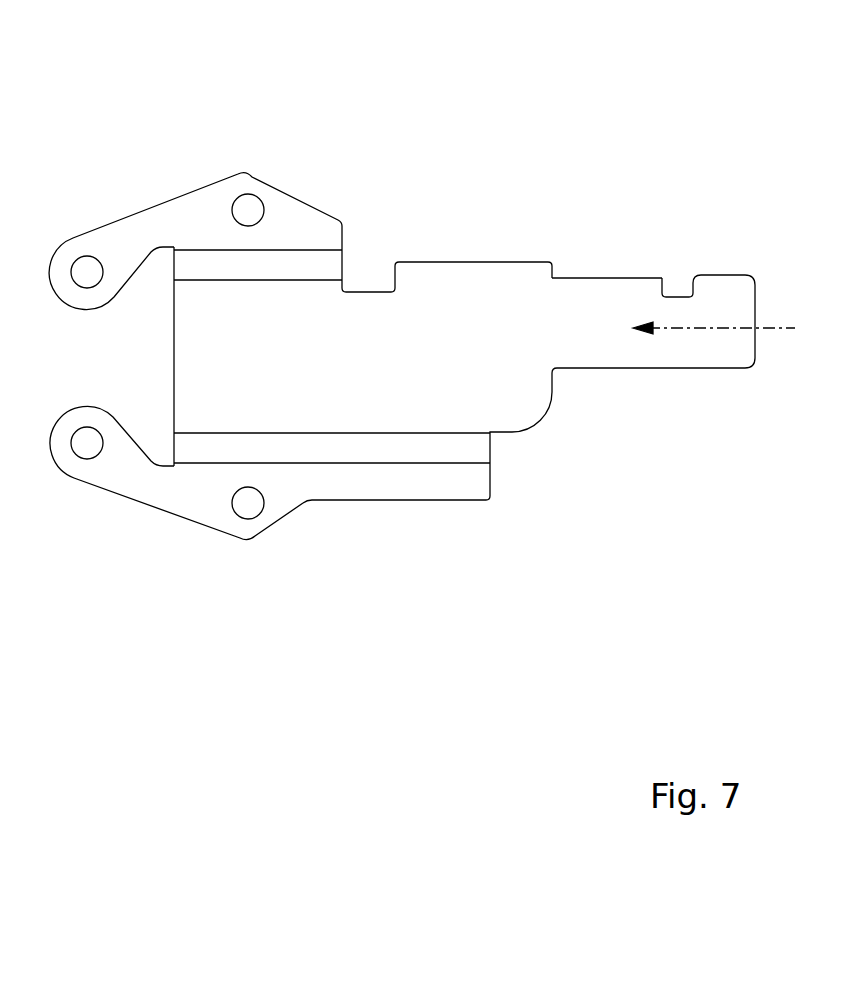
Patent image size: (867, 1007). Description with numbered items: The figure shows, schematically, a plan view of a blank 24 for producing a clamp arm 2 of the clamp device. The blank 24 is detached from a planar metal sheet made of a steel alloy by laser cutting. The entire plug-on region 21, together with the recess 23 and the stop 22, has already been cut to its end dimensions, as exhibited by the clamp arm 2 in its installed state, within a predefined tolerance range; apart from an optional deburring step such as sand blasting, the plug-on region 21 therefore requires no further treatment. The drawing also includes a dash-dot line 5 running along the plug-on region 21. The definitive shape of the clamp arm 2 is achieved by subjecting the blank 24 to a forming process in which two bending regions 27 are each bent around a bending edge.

The clamp arm 2 is at (146, 103).
The longitudinal axis 5 is at (772, 328).
The plug-on region 21 is at (688, 352).
The stop 22 is at (552, 385).
The recess 23 is at (675, 285).
The blank 24 is at (455, 280).
The bending regions 27 is at (281, 203).